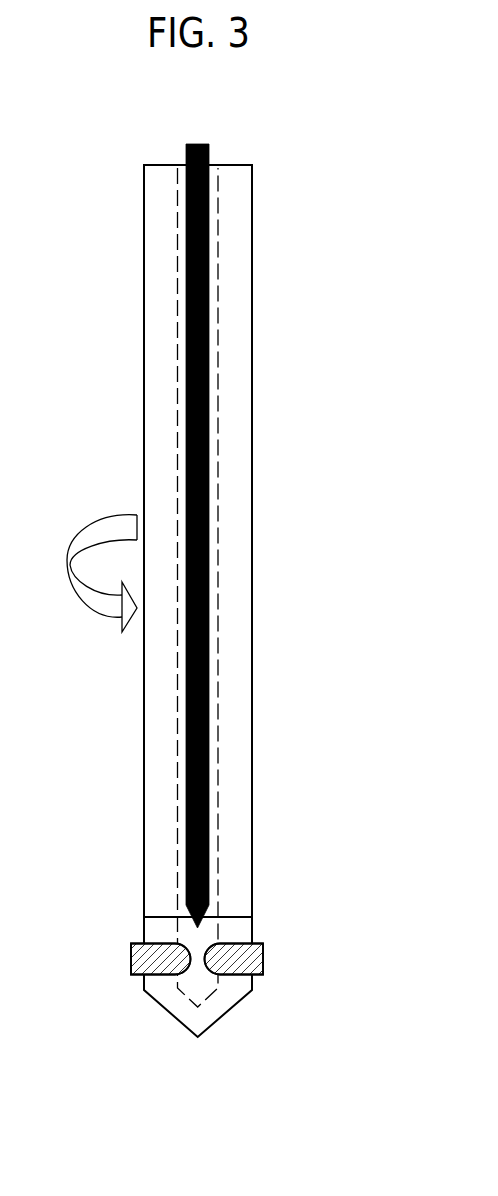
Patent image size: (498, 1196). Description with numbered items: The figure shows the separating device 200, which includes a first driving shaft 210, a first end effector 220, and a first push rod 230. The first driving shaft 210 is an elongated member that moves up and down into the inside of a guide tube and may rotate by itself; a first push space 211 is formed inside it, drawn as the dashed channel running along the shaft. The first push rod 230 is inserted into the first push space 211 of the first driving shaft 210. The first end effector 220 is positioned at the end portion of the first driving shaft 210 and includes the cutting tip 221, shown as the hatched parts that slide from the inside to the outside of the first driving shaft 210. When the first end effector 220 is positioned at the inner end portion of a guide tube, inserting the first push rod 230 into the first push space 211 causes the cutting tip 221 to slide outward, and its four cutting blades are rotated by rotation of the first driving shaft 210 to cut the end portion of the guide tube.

The separating device 200 is at (214, 122).
The first driving shaft 210 is at (229, 472).
The first push space 211 is at (219, 577).
The first end effector 220 is at (247, 987).
The cutting tip 221 is at (250, 960).
The first push rod 230 is at (208, 338).